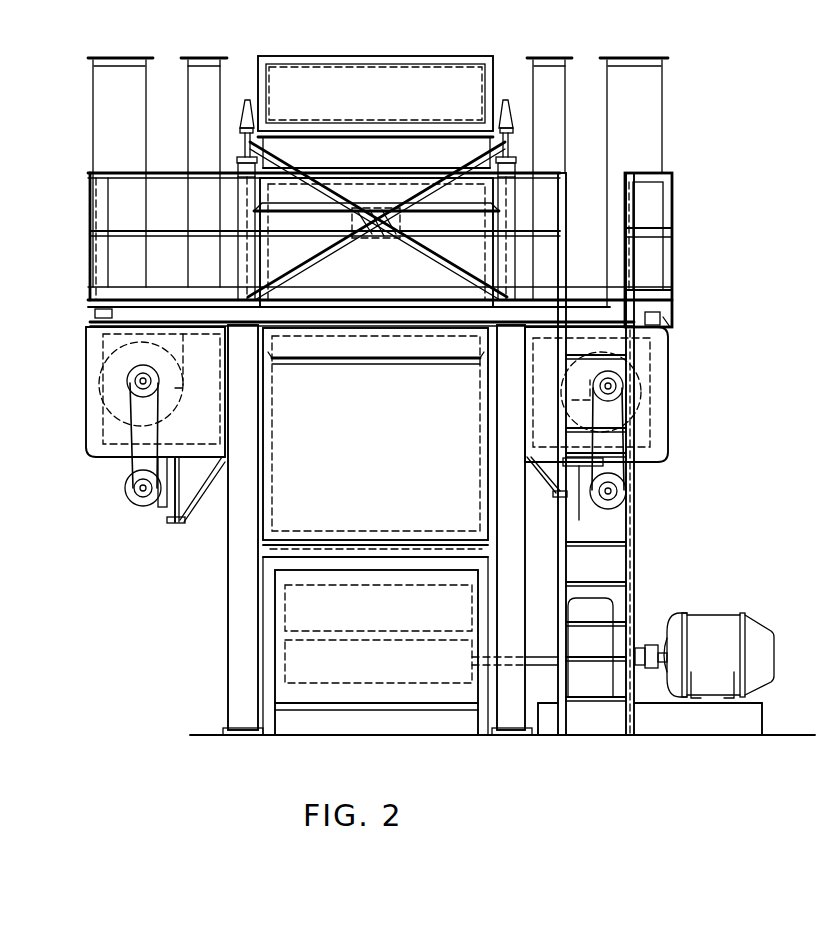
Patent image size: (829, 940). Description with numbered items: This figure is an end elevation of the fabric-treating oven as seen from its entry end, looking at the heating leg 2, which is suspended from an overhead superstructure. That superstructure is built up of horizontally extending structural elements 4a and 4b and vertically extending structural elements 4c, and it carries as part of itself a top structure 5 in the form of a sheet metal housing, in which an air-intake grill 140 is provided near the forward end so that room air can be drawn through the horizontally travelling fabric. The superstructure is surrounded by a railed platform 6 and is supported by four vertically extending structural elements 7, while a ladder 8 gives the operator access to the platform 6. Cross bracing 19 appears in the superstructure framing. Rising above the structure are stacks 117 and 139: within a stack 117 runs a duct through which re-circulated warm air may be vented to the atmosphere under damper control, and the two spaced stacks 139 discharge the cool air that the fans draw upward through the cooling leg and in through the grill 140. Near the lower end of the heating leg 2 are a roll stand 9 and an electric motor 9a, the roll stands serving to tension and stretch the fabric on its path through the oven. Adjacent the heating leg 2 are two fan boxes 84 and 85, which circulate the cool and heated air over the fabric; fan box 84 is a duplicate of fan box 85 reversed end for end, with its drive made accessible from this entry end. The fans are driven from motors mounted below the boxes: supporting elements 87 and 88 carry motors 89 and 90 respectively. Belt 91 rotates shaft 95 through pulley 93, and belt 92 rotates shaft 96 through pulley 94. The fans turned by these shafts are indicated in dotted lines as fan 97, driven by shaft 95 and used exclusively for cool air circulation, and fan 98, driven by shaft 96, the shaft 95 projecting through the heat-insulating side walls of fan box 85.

The stack 139 is at (130, 58).
The stack 117 is at (213, 57).
The top structure 5 is at (388, 56).
The air-intake grill 140 is at (302, 121).
The horizontally extending structural element 4b is at (242, 146).
The vertically extending structural element 4c is at (236, 223).
The railed platform 6 is at (90, 228).
The cross brace 19 is at (434, 277).
The horizontally extending structural element 4a is at (136, 320).
The fan box 84 is at (106, 353).
The pulley 94 is at (137, 372).
The shaft 96 is at (148, 378).
The fan 98 is at (120, 396).
The belt 92 is at (160, 429).
The motor 89 is at (135, 500).
The supporting element 87 is at (195, 500).
The fan box 85 is at (645, 360).
The pulley 93 is at (605, 378).
The shaft 95 is at (598, 396).
The fan 97 is at (643, 402).
The belt 91 is at (630, 438).
The motor 90 is at (626, 492).
The supporting element 88 is at (548, 490).
The ladder 8 is at (637, 533).
The vertically extending structural element 7 is at (230, 593).
The heating leg 2 is at (388, 558).
The roll stand 9 is at (270, 622).
The electric motor 9a is at (706, 612).